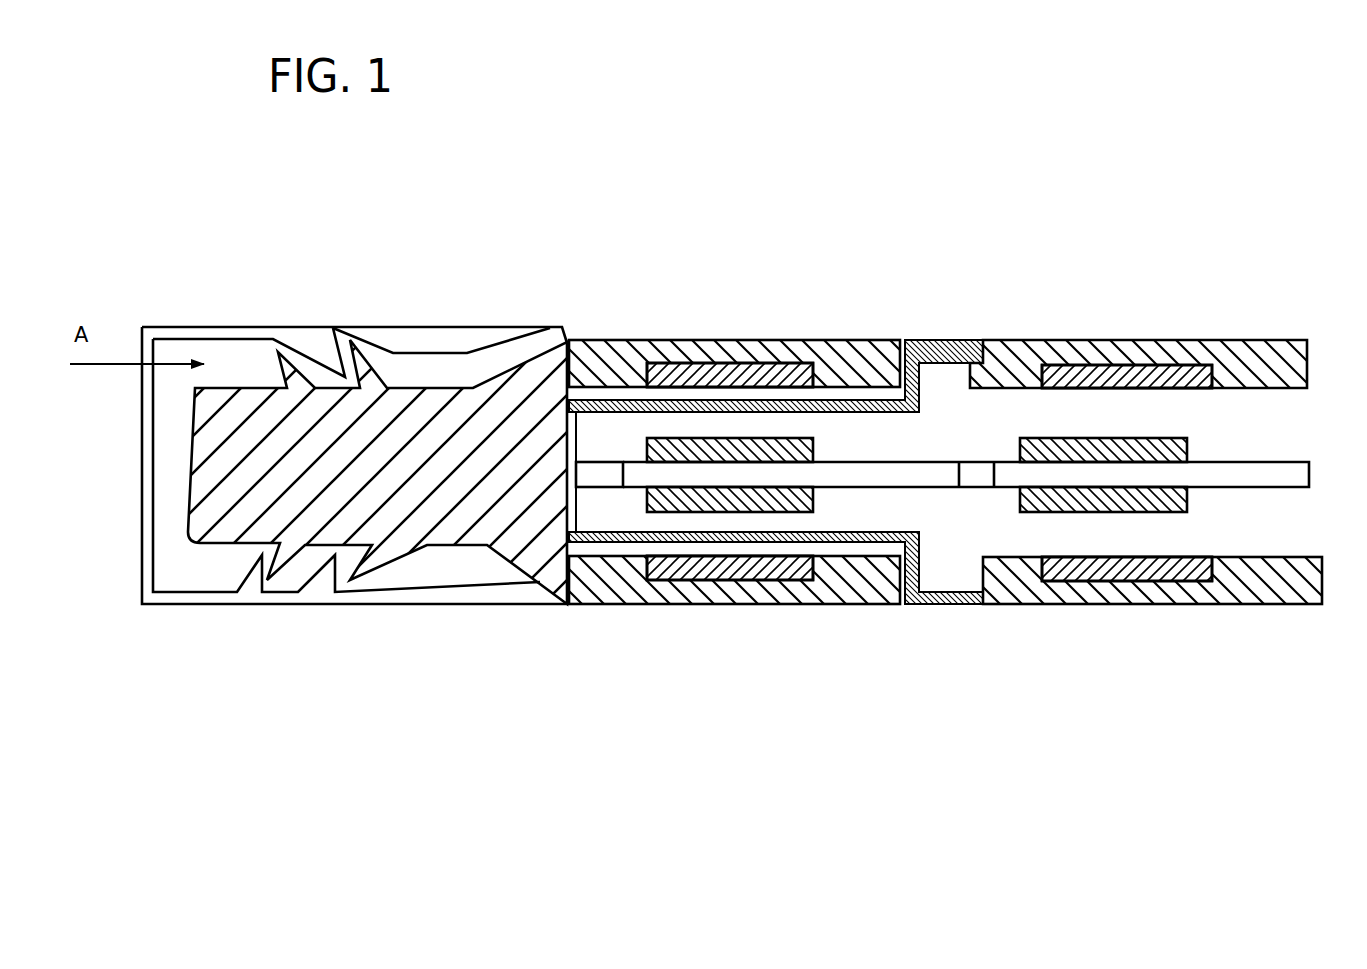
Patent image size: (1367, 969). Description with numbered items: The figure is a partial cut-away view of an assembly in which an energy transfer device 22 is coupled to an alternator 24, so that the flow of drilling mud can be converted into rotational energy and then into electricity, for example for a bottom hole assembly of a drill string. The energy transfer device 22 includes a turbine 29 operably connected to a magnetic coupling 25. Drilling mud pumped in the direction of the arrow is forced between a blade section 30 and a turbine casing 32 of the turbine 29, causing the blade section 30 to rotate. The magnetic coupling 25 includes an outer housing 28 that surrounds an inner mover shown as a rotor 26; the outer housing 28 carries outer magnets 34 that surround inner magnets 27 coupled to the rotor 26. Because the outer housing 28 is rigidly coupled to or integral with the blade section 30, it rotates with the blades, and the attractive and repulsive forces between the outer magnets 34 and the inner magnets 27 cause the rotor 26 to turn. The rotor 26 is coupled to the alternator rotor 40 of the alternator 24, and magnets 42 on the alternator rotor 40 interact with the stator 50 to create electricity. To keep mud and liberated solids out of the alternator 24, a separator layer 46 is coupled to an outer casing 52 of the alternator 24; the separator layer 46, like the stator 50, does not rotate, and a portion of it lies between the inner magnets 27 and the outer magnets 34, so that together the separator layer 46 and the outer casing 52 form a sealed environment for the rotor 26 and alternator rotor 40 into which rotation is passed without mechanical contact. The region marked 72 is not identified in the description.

The energy transfer device 22 is at (938, 720).
The alternator 24 is at (1111, 283).
The magnetic coupling 25 is at (714, 278).
The rotor 26 is at (597, 478).
The inner magnets 27 is at (793, 447).
The outer housing 28 is at (587, 345).
The turbine 29 is at (155, 625).
The blade section 30 is at (438, 418).
The turbine casing 32 is at (450, 340).
The outer magnets 34 is at (713, 373).
The alternator rotor 40 is at (1275, 470).
The magnets 42 is at (1167, 443).
The separator layer 46 is at (927, 340).
The stator 50 is at (1128, 377).
The outer casing 52 is at (1032, 592).
The gap 72 is at (781, 421).